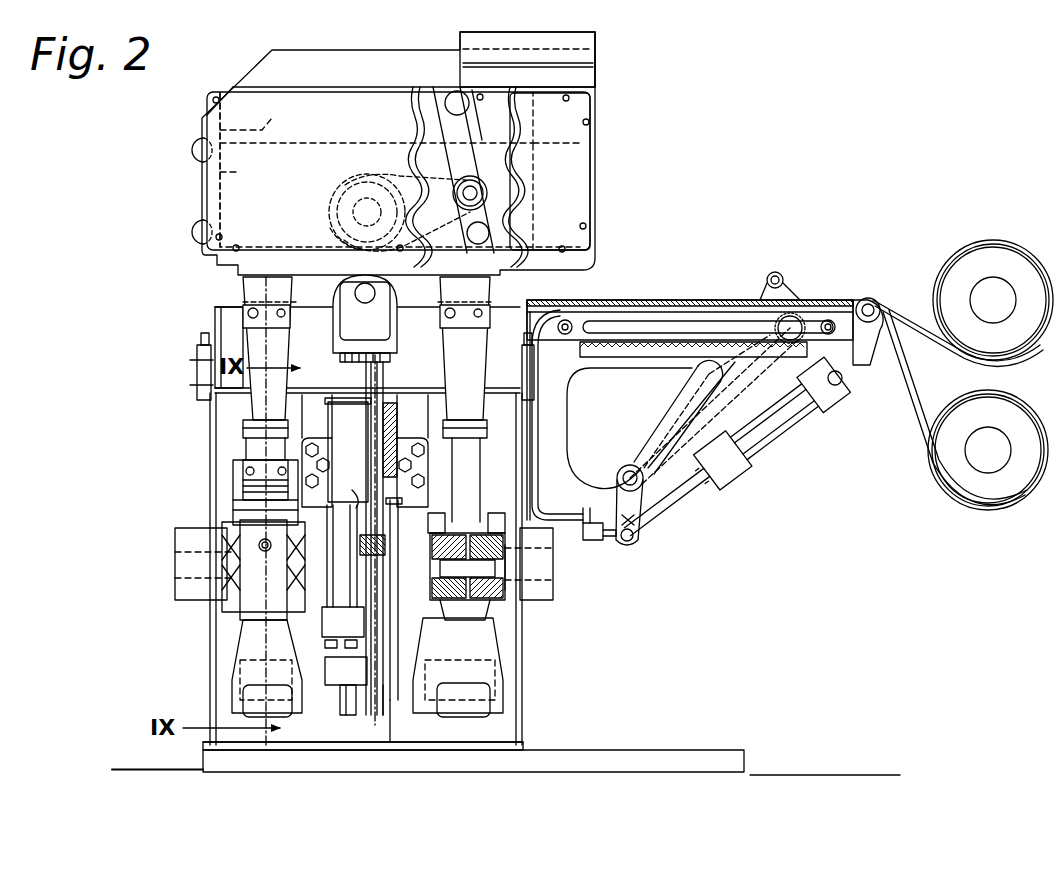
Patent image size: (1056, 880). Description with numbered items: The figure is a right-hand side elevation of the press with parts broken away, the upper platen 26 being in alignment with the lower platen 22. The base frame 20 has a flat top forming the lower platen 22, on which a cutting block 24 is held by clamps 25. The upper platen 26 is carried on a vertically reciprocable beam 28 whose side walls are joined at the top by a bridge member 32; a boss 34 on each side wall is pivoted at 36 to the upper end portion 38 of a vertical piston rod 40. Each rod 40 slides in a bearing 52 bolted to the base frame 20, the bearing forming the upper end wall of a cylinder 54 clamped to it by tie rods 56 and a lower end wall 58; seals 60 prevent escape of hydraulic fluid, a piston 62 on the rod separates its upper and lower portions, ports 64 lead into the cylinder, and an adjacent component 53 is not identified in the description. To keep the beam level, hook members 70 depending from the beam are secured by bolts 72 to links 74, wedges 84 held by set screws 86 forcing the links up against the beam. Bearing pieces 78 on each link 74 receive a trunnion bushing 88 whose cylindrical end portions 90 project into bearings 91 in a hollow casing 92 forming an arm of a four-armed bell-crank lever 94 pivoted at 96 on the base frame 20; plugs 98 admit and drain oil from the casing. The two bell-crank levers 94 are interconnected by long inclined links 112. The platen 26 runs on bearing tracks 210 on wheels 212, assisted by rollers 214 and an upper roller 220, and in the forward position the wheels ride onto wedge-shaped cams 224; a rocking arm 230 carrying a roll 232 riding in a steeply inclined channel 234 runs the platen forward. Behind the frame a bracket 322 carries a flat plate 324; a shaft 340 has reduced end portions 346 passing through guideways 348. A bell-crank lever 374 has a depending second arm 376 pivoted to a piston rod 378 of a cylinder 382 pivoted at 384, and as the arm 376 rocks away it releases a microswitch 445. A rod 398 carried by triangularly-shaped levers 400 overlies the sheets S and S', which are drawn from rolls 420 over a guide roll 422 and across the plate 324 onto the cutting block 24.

The base frame 20 is at (210, 445).
The lower platen 22 is at (320, 394).
The cutting block 24 is at (228, 336).
The clamps 25 is at (200, 345).
The upper platen 26 is at (232, 193).
The beam 28 is at (197, 112).
The bridge member 32 is at (470, 40).
The boss 34 is at (388, 333).
The pivot 36 is at (365, 293).
The upper end portion 38 is at (390, 294).
The piston rod 40 is at (378, 376).
The bearing 52 is at (360, 462).
The block 53 is at (422, 453).
The cylinder 54 is at (459, 572).
The tie rods 56 is at (394, 552).
The lower end wall 58 is at (332, 645).
The seals 60 is at (383, 437).
The pistons 62 is at (362, 553).
The ports 64 is at (362, 492).
The hook members 70 is at (283, 317).
The bolts 72 is at (255, 318).
The links 74 is at (258, 375).
The bearing pieces 78 is at (488, 567).
The wedges 84 is at (246, 306).
The set screws 86 is at (268, 301).
The trunnion bushing 88 is at (467, 566).
The cylindrical end portions 90 is at (465, 609).
The bearings 91 is at (505, 548).
The hollow casing 92 is at (250, 600).
The bell-crank lever 94 is at (250, 648).
The pivot 96 is at (190, 566).
The plugs 98 is at (270, 551).
The links 112 is at (250, 702).
The bearing tracks 210 is at (560, 250).
The wheels 212 is at (338, 198).
The rollers 214 is at (196, 232).
The upper roller 220 is at (196, 150).
The wedge-shaped cams 224 is at (345, 246).
The rocking arm 230 is at (398, 184).
The roll 232 is at (483, 193).
The inclined channel 234 is at (462, 168).
The bracket 322 is at (562, 438).
The plate 324 is at (752, 300).
The shaft 340 is at (565, 335).
The reduced end portions 346 is at (829, 320).
The guideways 348 is at (608, 322).
The bell-crank lever 374 is at (690, 395).
The depending second arm 376 is at (640, 518).
The piston rod 378 is at (688, 486).
The cylinder 382 is at (763, 430).
The pivot 384 is at (842, 385).
The rod 398 is at (774, 278).
The triangularly-shaped lever 400 is at (786, 290).
The rolls 420 is at (993, 292).
The guide roll 422 is at (872, 298).
The microswitch 445 is at (598, 540).
The sheet S is at (776, 412).
The sheet S' is at (785, 318).